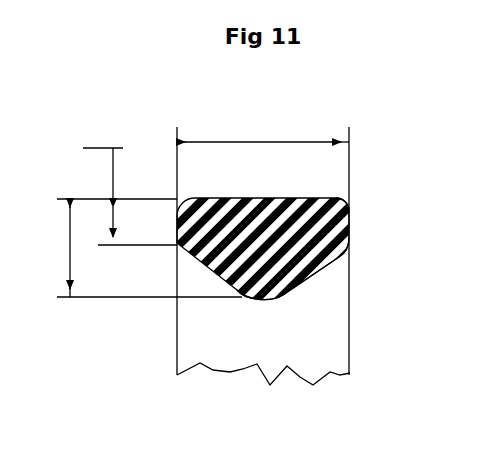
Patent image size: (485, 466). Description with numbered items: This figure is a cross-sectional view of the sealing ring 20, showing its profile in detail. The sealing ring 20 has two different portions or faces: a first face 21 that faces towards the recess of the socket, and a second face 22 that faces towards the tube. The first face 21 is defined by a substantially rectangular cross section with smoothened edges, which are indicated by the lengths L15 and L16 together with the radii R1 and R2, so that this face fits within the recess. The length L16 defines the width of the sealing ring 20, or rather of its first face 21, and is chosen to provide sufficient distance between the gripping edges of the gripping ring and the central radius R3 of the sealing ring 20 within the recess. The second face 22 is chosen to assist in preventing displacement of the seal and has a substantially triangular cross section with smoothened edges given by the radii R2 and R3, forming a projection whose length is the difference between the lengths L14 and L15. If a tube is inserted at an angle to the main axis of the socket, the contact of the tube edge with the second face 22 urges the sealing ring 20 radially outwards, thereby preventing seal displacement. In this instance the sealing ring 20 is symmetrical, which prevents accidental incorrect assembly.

The sealing ring 20 is at (366, 218).
The first face 21 is at (257, 198).
The second face 22 is at (302, 280).
The radius R1 is at (387, 163).
The radius R2 is at (385, 263).
The central radius R3 is at (206, 357).
The length L14 is at (143, 248).
The length L15 is at (117, 185).
The length L16 is at (263, 130).